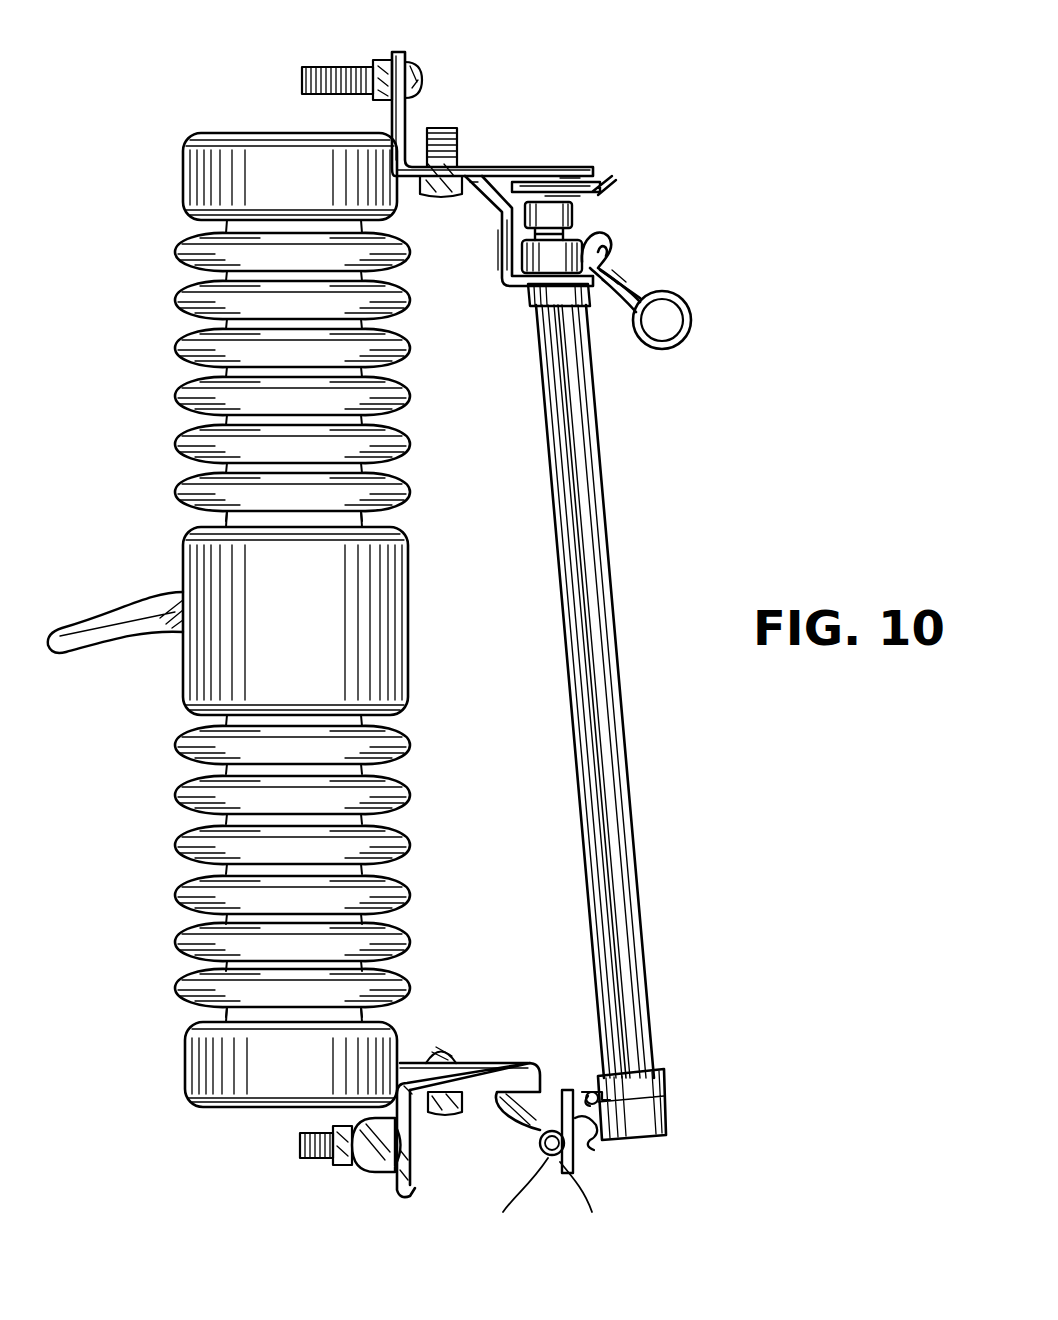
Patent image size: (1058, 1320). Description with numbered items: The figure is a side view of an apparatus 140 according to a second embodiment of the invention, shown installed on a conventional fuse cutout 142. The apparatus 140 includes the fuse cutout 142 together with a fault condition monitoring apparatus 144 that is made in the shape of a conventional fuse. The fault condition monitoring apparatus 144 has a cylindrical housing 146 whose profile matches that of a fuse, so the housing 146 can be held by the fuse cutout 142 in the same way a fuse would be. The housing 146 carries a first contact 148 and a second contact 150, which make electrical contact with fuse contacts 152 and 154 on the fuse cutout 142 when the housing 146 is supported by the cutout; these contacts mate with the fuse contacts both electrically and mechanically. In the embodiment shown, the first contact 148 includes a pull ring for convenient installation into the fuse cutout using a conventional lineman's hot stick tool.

The apparatus 140 is at (580, 80).
The fuse cutout 142 is at (151, 204).
The fault condition monitoring apparatus 144 is at (606, 836).
The cylindrical housing 146 is at (590, 521).
The first contact 148 is at (570, 210).
The second contact 150 is at (550, 1160).
The fuse contact 152 is at (592, 190).
The fuse contact 154 is at (566, 1165).